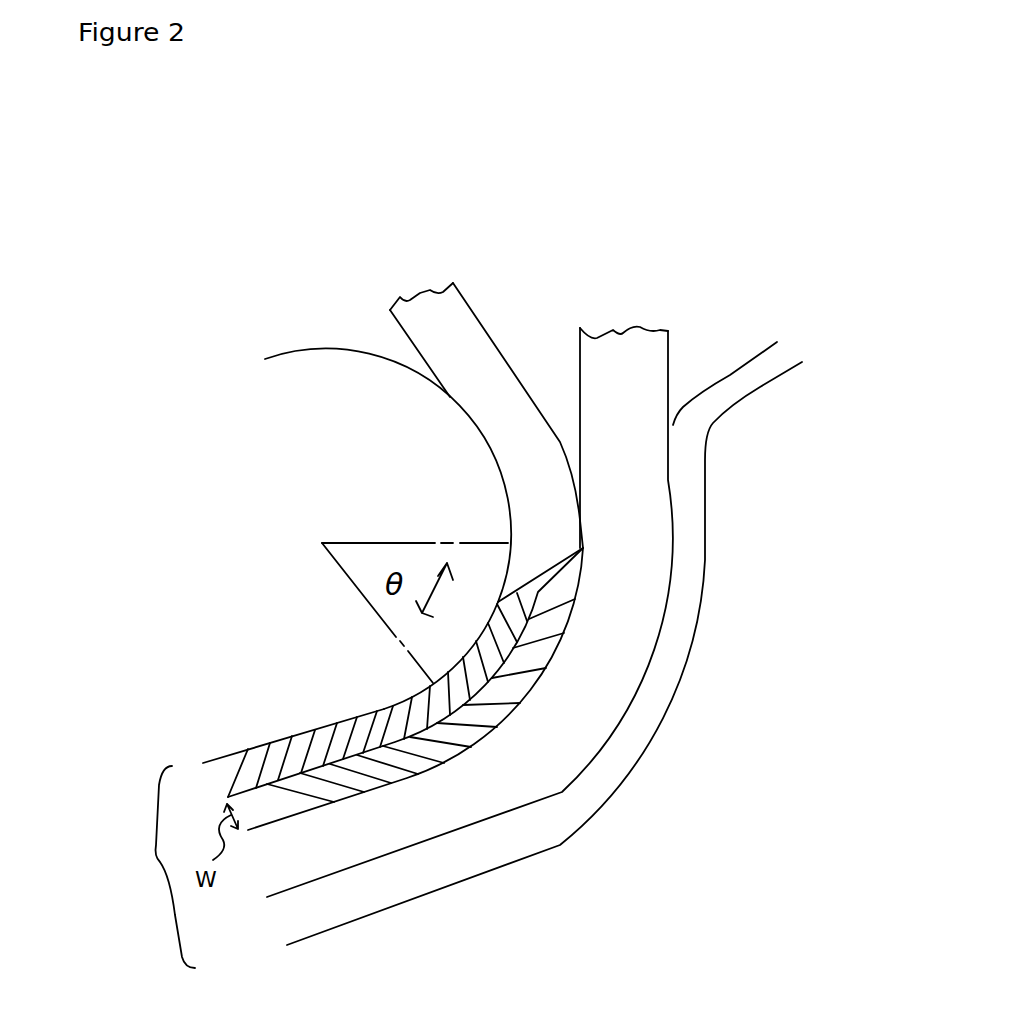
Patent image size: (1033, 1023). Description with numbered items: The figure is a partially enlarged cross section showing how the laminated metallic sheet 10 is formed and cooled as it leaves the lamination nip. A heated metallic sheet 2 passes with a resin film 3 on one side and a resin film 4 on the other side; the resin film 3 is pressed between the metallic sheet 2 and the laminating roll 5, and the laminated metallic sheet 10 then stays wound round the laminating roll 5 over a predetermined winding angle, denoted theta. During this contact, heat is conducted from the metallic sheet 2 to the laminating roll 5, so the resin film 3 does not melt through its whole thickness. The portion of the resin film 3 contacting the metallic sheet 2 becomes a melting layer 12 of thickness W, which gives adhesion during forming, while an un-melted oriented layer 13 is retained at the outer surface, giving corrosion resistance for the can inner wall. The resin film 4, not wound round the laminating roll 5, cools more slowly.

The metallic sheet 2 is at (637, 363).
The resin film 3 is at (470, 335).
The resin film 4 is at (615, 775).
The laminating roll 5 is at (235, 317).
The laminated metallic sheet 10 is at (145, 867).
The melting layer 12 is at (357, 785).
The oriented layer 13 is at (250, 748).